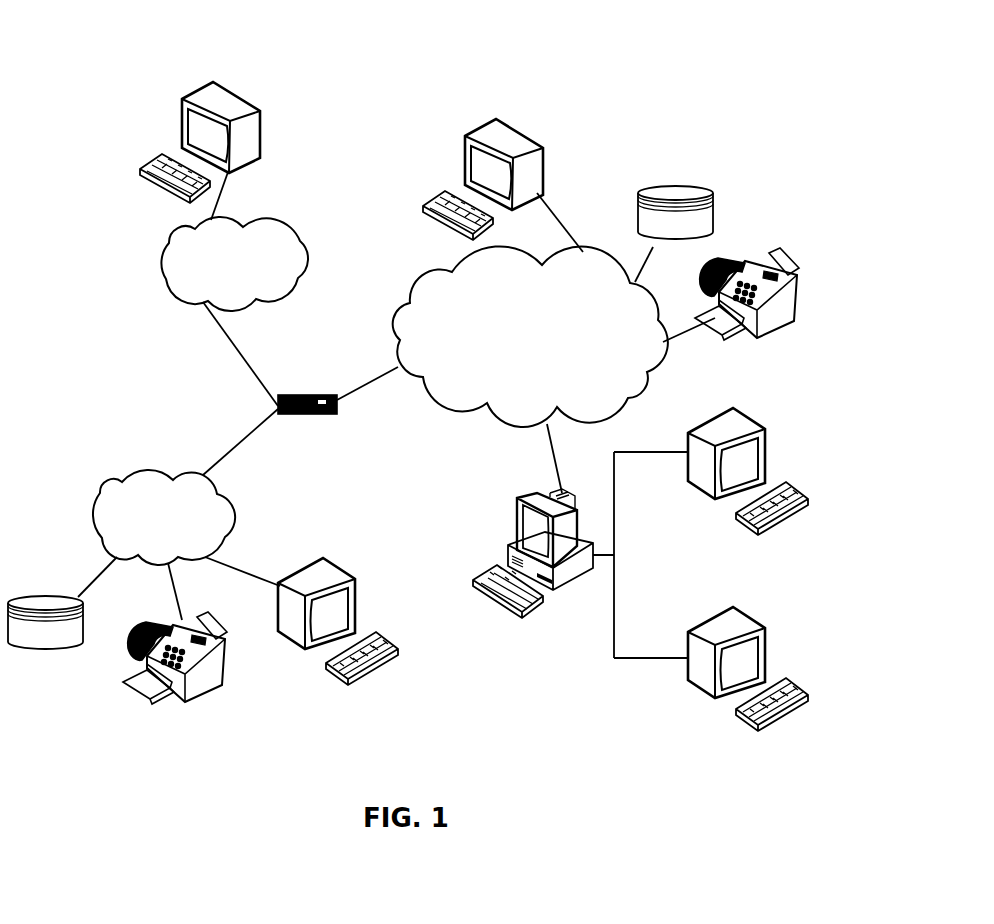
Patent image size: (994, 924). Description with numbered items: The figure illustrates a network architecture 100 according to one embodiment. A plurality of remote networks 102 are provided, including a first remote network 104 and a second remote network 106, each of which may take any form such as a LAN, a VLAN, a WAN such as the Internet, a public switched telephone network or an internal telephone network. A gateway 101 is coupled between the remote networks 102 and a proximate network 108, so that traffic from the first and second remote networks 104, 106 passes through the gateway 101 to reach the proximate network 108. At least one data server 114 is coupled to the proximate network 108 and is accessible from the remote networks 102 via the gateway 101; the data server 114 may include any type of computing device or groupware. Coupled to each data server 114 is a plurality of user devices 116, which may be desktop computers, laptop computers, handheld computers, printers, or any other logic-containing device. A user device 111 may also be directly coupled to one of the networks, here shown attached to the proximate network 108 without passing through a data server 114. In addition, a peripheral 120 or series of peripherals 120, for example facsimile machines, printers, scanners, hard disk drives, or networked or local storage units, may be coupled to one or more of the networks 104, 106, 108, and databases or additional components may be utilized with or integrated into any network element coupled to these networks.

The network architecture 100 is at (112, 62).
The gateway 101 is at (291, 395).
The remote networks 102 is at (135, 336).
The first remote network 104 is at (100, 494).
The second remote network 106 is at (300, 238).
The proximate network 108 is at (630, 397).
The user device 111 is at (543, 150).
The data server 114 is at (517, 511).
The user devices 116 is at (262, 117).
The peripheral 120 is at (713, 193).